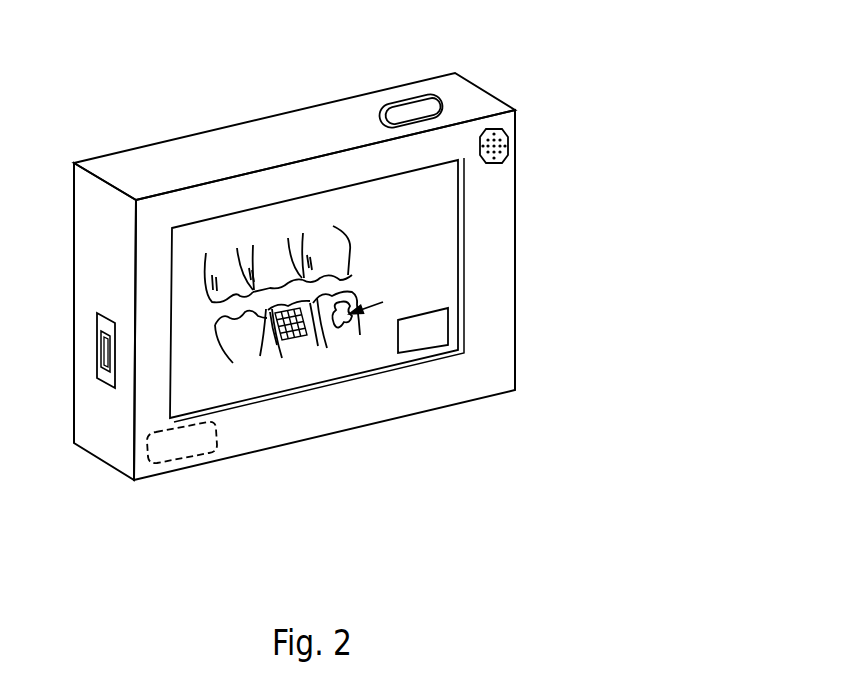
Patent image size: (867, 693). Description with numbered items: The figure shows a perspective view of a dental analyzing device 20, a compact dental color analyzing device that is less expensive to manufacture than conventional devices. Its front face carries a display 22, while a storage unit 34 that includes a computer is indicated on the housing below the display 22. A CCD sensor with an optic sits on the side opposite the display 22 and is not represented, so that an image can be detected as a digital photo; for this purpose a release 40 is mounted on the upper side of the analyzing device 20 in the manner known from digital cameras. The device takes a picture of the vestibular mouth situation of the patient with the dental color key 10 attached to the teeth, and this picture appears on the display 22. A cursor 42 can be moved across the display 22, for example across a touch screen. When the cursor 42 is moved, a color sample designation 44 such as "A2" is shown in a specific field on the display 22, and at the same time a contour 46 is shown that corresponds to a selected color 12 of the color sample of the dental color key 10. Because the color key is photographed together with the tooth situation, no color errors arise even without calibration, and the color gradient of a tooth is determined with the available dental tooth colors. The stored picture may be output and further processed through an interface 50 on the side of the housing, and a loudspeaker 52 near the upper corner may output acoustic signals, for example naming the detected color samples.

The dental color key 10 is at (297, 338).
The selected color 12 is at (287, 340).
The dental analyzing device 20 is at (616, 200).
The display 22 is at (428, 218).
The storage unit 34 is at (178, 447).
The release 40 is at (413, 110).
The cursor 42 is at (383, 302).
The color sample designation 44 is at (440, 337).
The contour 46 is at (343, 333).
The interface 50 is at (102, 349).
The loudspeaker 52 is at (503, 146).